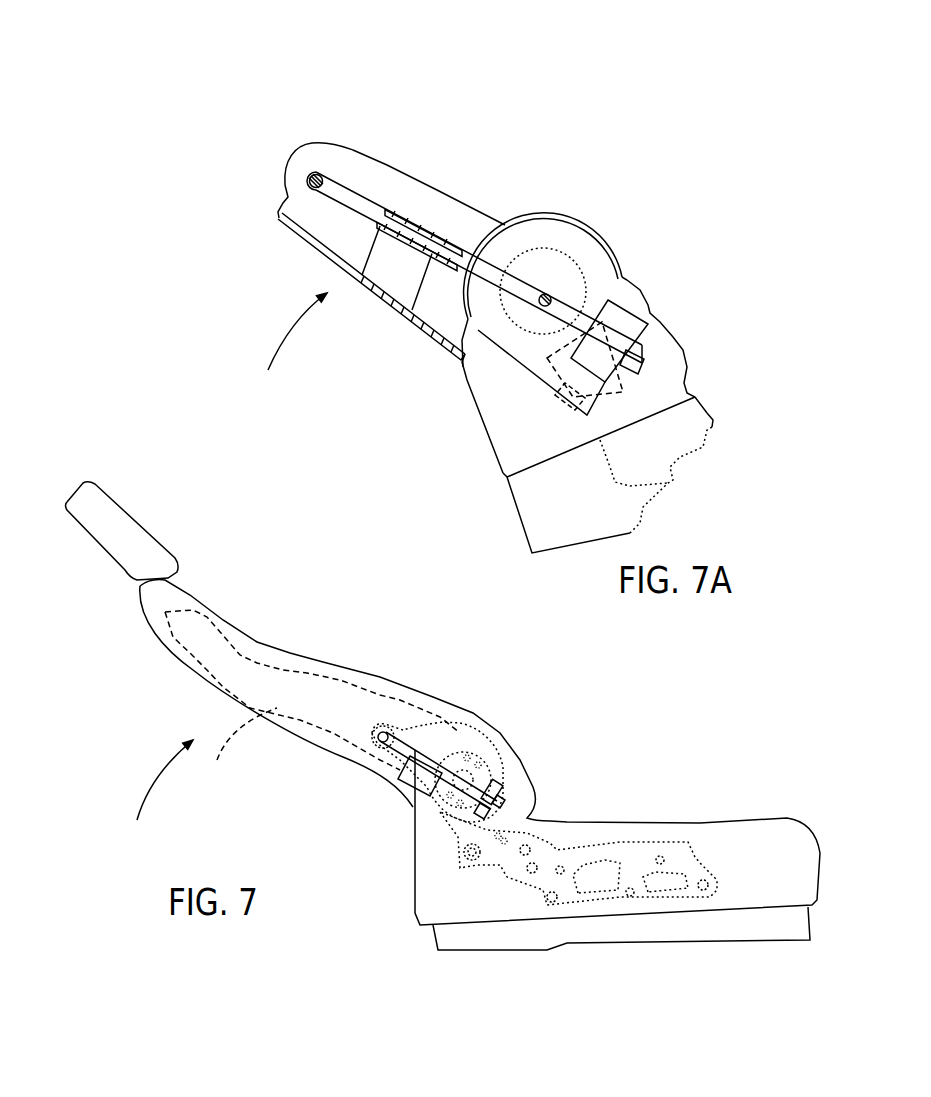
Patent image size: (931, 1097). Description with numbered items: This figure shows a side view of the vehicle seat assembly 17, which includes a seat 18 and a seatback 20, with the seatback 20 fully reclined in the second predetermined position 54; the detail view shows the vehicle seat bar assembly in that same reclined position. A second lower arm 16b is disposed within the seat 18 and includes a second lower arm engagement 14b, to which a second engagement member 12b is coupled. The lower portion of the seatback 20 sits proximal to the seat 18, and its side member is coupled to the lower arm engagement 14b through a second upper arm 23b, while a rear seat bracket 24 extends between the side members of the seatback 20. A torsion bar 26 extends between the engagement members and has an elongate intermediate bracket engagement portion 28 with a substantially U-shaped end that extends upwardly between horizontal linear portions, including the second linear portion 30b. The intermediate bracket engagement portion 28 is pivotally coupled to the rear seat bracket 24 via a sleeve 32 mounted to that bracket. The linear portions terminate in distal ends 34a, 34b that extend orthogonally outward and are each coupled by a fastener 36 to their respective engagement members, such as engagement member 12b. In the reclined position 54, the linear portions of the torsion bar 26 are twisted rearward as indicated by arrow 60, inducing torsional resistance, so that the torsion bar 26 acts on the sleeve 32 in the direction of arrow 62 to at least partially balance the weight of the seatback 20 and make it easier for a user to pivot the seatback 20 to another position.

In FIG. 7A, the second engagement member 12b is at (586, 245).
In FIG. 7A, the second lower arm engagement 14b is at (480, 385).
In FIG. 7, the second lower arm engagement 14b is at (503, 812).
In FIG. 7, the second lower arm 16b is at (543, 890).
In FIG. 7A, the vehicle seat assembly 17 is at (552, 131).
In FIG. 7, the vehicle seat assembly 17 is at (326, 549).
In FIG. 7A, the seat 18 is at (570, 518).
In FIG. 7, the seat 18 is at (768, 871).
In FIG. 7A, the seatback 20 is at (455, 233).
In FIG. 7, the seatback 20 is at (250, 691).
In FIG. 7, the second upper arm 23b is at (380, 760).
In FIG. 7A, the rear seat bracket 24 is at (323, 251).
In FIG. 7, the rear seat bracket 24 is at (277, 708).
In FIG. 7A, the torsion bar 26 is at (374, 196).
In FIG. 7, the torsion bar 26 is at (405, 738).
In FIG. 7A, the intermediate bracket engagement portion 28 is at (340, 192).
In FIG. 7, the intermediate bracket engagement portion 28 is at (385, 733).
In FIG. 7A, the second linear portion 30b is at (547, 294).
In FIG. 7A, the sleeve 32 is at (427, 220).
In FIG. 7, the sleeve 32 is at (430, 760).
In FIG. 7A, the distal end 34a is at (623, 392).
In FIG. 7, the distal end 34a is at (485, 810).
In FIG. 7A, the distal end 34b is at (640, 358).
In FIG. 7, the distal end 34b is at (497, 800).
In FIG. 7A, the fastener 36 is at (620, 320).
In FIG. 7, the fastener 36 is at (488, 778).
In FIG. 7A, the second predetermined position 54 is at (228, 108).
In FIG. 7, the second predetermined position 54 is at (123, 470).
In FIG. 7A, the arrow 60 is at (473, 326).
In FIG. 7A, the arrow 62 is at (288, 330).
In FIG. 7, the arrow 62 is at (167, 770).